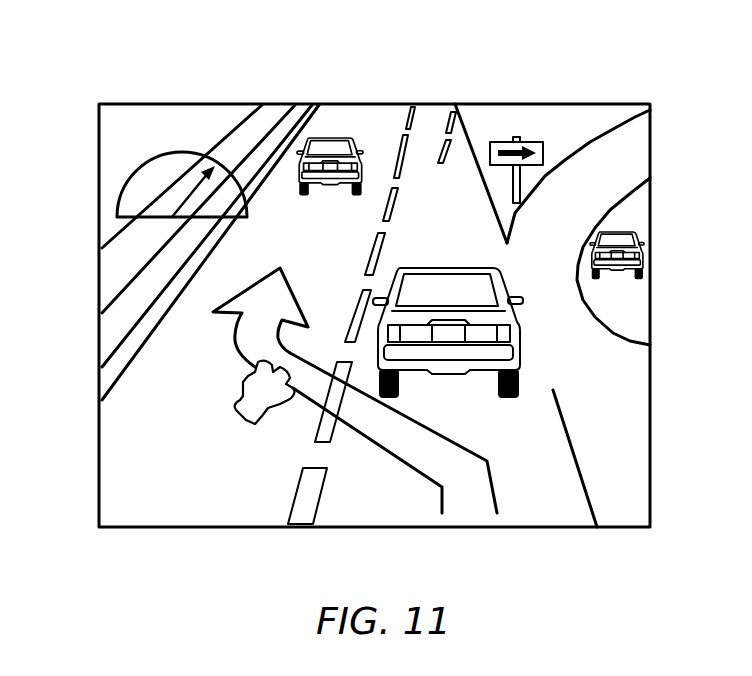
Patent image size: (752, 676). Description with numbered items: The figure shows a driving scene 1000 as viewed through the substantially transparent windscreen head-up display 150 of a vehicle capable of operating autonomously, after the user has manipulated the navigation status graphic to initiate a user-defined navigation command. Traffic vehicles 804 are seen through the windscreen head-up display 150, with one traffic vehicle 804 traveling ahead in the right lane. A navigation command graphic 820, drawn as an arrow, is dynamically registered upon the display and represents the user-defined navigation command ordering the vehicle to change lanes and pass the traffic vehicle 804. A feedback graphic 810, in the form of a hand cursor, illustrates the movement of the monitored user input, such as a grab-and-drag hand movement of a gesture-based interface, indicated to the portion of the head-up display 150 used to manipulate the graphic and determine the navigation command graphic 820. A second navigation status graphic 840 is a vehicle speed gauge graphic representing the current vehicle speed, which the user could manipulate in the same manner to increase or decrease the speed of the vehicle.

The driving scene 1000 is at (127, 80).
The windscreen head-up display 150 is at (356, 104).
The second navigation status graphic 840 is at (119, 200).
The traffic vehicles 804 is at (509, 267).
The feedback graphic 810 is at (178, 352).
The navigation command graphic 820 is at (448, 460).